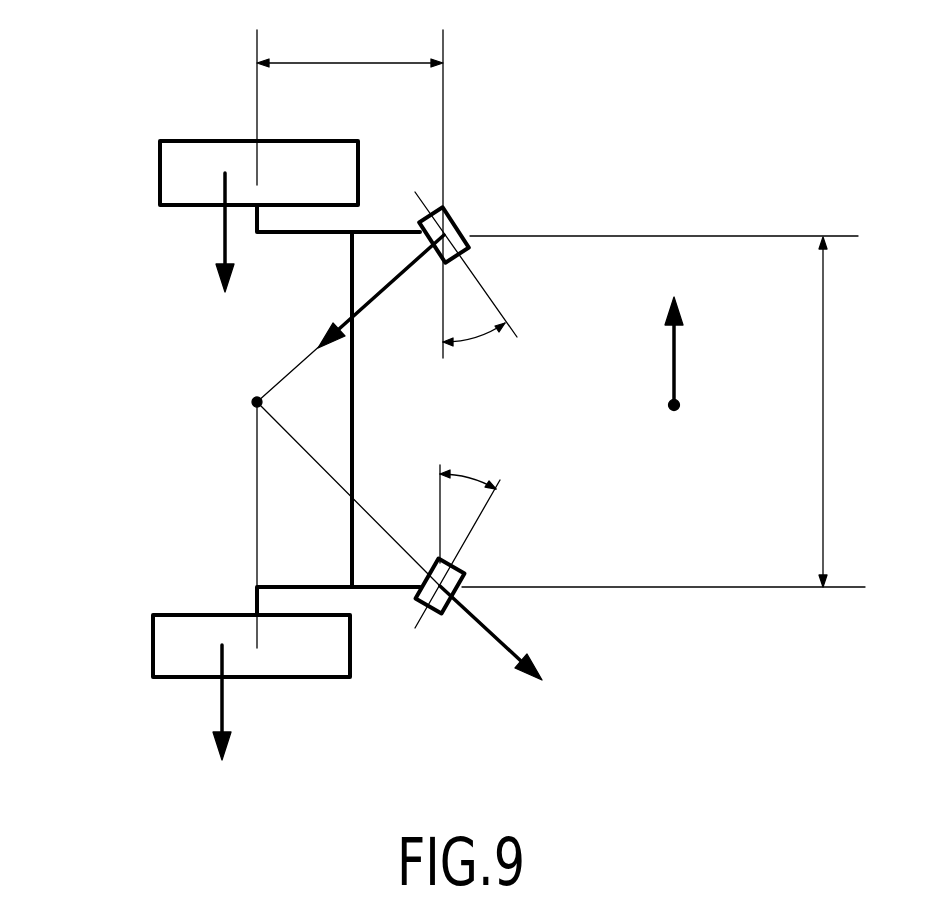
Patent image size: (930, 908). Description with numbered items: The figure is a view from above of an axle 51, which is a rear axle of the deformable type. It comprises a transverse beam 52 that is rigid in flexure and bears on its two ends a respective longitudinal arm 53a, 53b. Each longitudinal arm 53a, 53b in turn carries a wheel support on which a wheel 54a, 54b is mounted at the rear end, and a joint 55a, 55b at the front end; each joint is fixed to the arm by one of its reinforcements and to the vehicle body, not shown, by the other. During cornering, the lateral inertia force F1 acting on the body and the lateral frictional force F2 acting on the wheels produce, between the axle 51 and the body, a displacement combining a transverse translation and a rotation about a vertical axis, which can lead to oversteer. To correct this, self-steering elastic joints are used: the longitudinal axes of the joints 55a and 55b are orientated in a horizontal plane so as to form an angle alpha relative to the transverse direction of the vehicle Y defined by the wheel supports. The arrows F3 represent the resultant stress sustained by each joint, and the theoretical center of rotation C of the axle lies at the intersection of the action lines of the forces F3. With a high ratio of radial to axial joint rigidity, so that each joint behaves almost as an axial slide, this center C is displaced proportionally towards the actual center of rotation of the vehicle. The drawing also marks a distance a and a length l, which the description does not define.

The axle 51 is at (301, 413).
The transverse beam 52 is at (352, 388).
The longitudinal arm 53a is at (388, 590).
The longitudinal arm 53b is at (383, 231).
The wheel 54a is at (167, 678).
The wheel 54b is at (190, 140).
The joint 55a is at (464, 575).
The joint 55b is at (456, 221).
The theoretical center of rotation C is at (255, 402).
The transverse direction of the vehicle Y is at (440, 512).
The offset distance a is at (350, 44).
The length l is at (834, 412).
The angle alpha is at (480, 406).
The lateral inertia force F1 is at (674, 350).
The lateral frictional force F2 is at (220, 247).
The resultant stress F3 is at (487, 683).